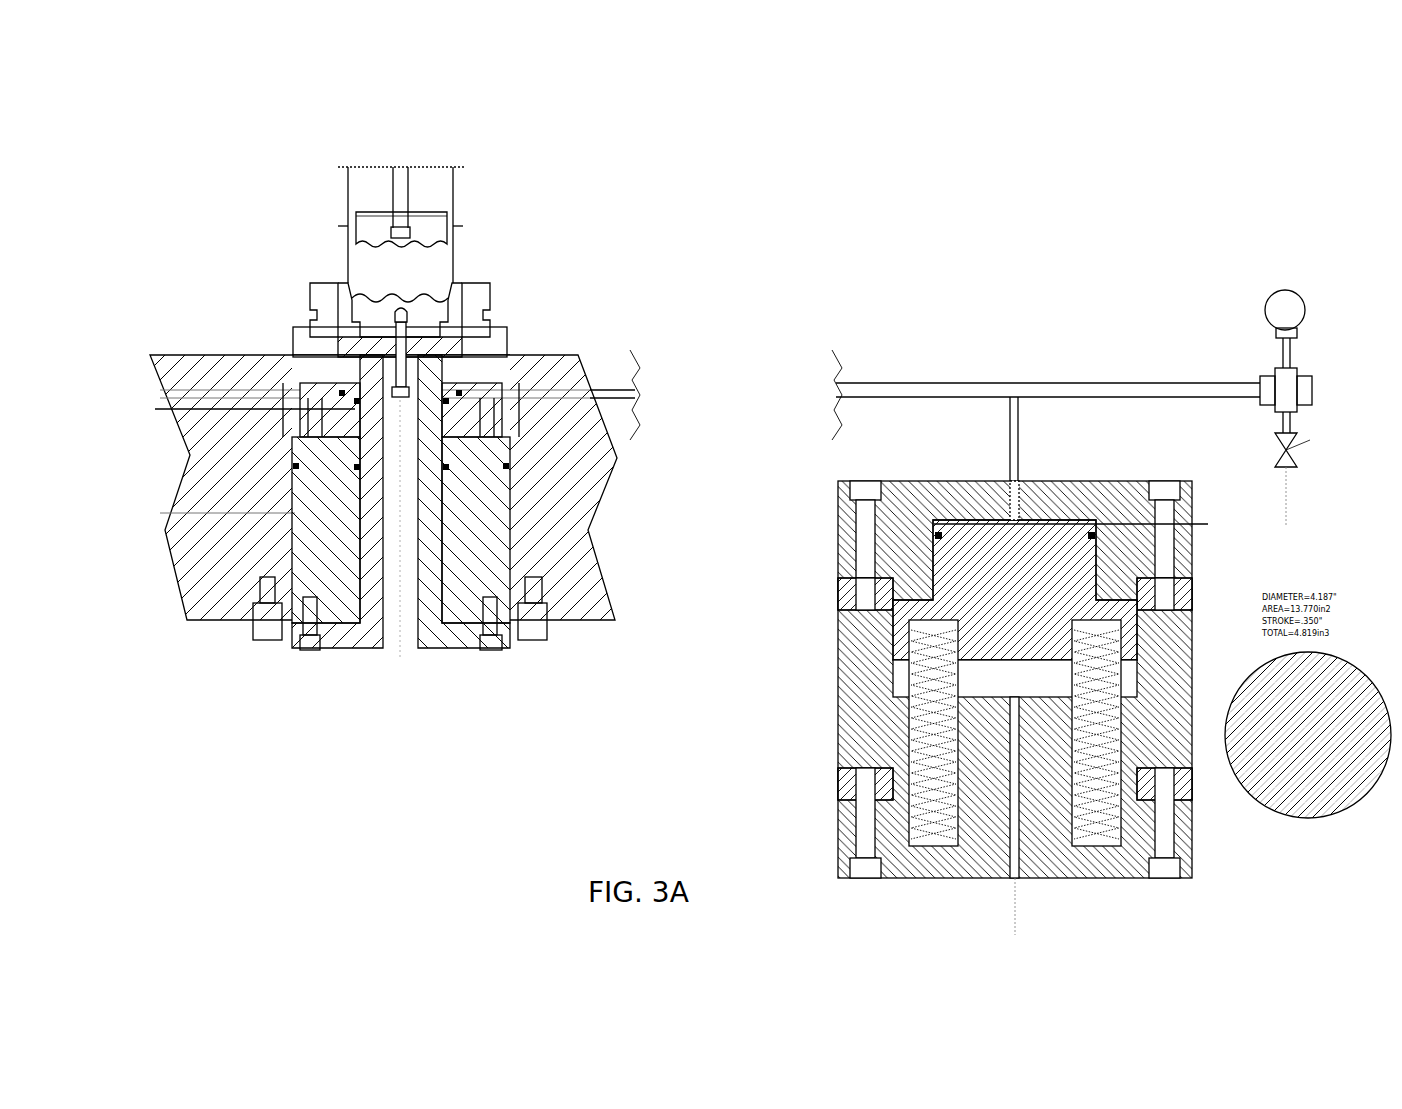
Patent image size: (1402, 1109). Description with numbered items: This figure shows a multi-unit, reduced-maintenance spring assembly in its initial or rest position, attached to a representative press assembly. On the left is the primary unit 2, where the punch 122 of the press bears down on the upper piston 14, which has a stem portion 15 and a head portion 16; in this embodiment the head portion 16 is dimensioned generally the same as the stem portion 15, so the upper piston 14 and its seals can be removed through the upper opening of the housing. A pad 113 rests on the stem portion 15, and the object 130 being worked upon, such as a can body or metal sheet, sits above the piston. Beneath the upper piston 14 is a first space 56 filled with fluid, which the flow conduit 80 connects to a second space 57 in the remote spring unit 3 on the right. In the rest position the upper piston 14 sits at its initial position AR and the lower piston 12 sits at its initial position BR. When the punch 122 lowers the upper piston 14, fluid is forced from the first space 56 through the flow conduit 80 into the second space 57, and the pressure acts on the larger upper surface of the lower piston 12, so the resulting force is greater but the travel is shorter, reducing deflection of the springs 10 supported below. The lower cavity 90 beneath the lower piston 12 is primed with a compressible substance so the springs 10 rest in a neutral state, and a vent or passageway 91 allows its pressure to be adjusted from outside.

The primary unit 2 is at (329, 690).
The remote spring unit 3 is at (1220, 896).
The spring 10 is at (1100, 800).
The lower piston 12 is at (1056, 555).
The upper piston 14 is at (345, 368).
The stem portion 15 is at (460, 357).
The head portion 16 is at (453, 398).
The first space 56 is at (450, 420).
The second space 57 is at (958, 517).
The flow conduit 80 is at (852, 382).
The lower cavity 90 is at (972, 684).
The vent or passageway 91 is at (1008, 884).
The pad 113 is at (457, 307).
The punch 122 is at (368, 190).
The object 130 is at (348, 247).
The initial position of upper piston AR is at (241, 420).
The initial position of lower piston BR is at (1083, 525).